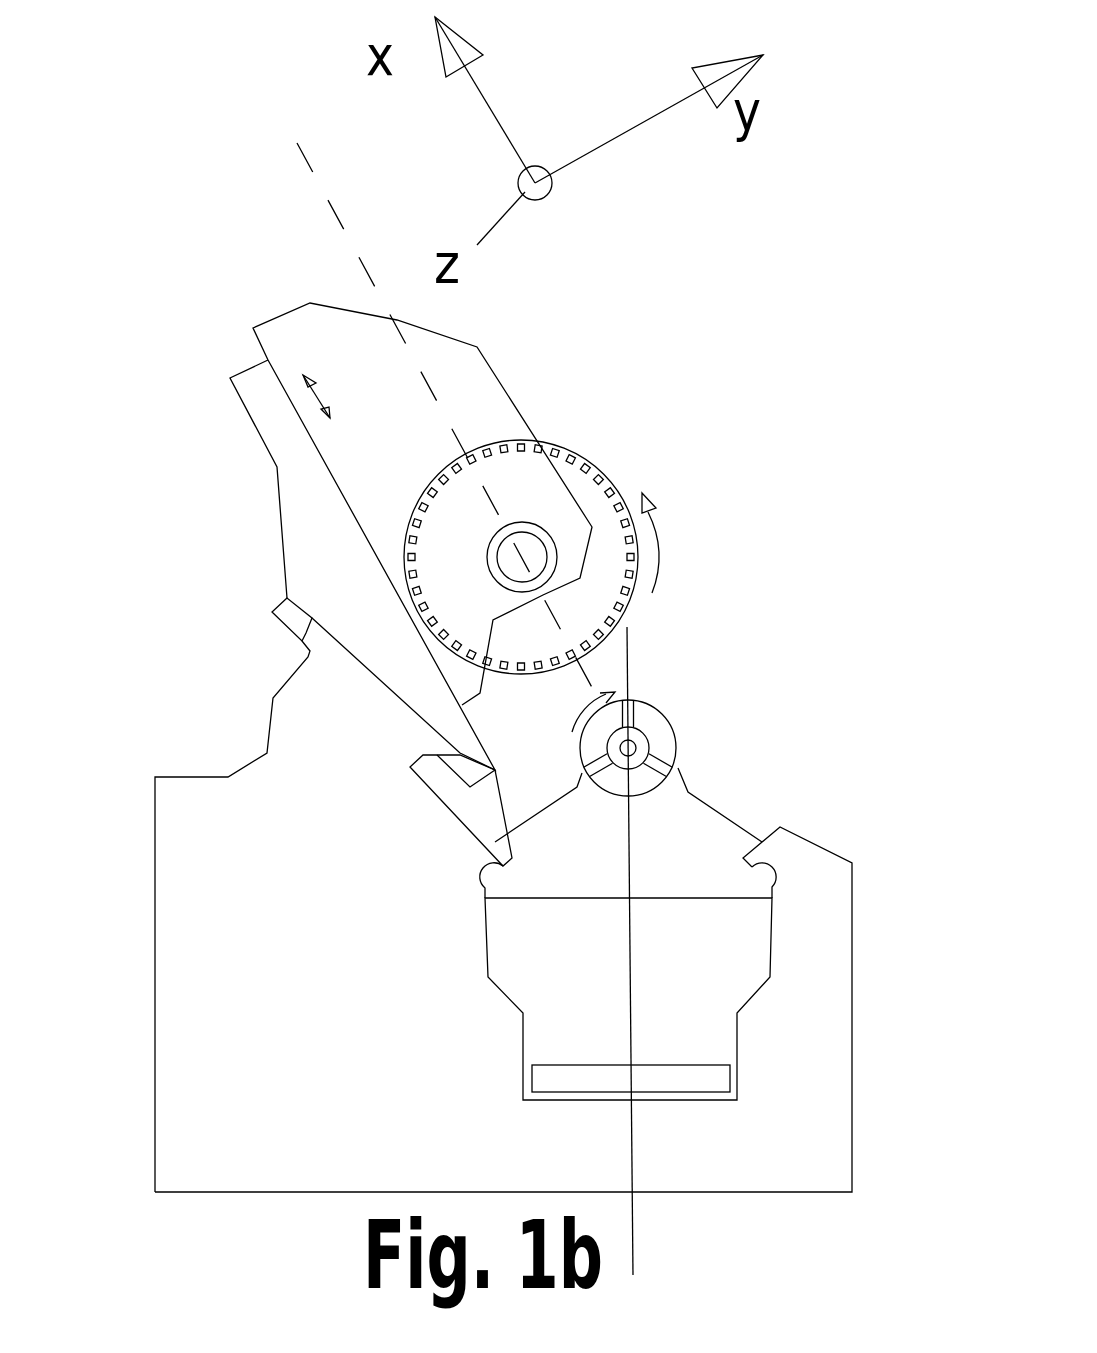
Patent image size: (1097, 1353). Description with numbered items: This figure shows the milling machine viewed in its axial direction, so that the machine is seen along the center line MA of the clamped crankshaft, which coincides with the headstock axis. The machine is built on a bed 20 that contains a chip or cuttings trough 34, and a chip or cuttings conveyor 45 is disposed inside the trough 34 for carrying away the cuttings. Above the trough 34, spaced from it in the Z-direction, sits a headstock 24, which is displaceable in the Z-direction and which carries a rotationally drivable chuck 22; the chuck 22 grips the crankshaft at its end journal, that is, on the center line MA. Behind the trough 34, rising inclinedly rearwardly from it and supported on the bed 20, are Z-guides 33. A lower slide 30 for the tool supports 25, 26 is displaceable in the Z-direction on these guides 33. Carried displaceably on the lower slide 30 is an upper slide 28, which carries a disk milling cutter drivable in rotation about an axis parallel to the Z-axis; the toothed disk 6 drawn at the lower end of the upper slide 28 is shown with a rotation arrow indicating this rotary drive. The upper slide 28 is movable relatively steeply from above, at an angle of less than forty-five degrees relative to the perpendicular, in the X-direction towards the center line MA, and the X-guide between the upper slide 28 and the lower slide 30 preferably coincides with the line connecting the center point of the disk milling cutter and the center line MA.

The indexing disc 6 is at (600, 472).
The bed 20 is at (503, 778).
The chuck 22 is at (647, 720).
The headstock 24 is at (645, 790).
The tool support 25 is at (446, 402).
The tool support 26 is at (395, 300).
The upper slide 28 is at (310, 347).
The lower slide 30 is at (381, 565).
The Z-guides 33 is at (440, 748).
The chip trough 34 is at (628, 999).
The chip conveyor 45 is at (687, 1085).
The center line MA is at (612, 725).